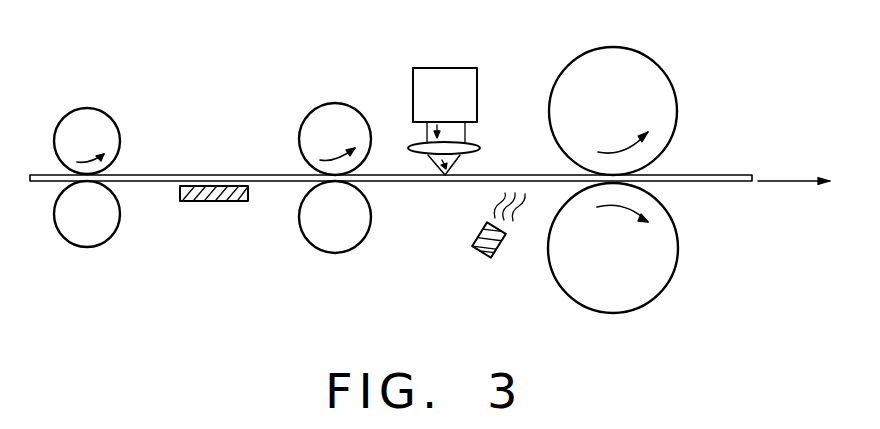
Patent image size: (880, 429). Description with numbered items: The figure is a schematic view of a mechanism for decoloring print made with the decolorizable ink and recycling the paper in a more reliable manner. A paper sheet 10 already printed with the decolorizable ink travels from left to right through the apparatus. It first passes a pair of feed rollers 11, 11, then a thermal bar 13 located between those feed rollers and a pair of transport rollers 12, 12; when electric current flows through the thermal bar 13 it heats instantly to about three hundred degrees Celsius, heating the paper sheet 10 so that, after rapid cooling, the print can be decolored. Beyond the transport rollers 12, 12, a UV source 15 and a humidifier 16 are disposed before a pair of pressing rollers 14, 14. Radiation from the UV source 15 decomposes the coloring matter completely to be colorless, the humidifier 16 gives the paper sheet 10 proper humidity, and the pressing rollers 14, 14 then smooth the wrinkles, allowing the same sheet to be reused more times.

The paper sheet 10 is at (708, 175).
The feed rollers 11 is at (112, 132).
The transport rollers 12 is at (340, 110).
The thermal bar 13 is at (205, 202).
The pressing rollers 14 is at (578, 65).
The UV source 15 is at (428, 78).
The humidifier 16 is at (483, 255).